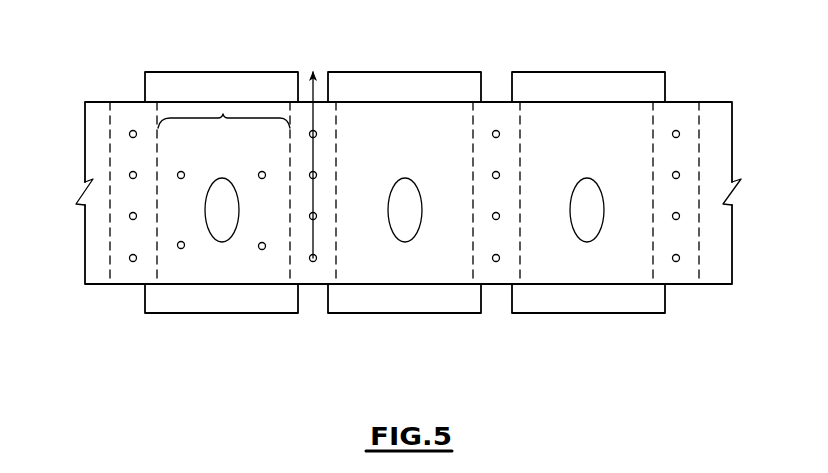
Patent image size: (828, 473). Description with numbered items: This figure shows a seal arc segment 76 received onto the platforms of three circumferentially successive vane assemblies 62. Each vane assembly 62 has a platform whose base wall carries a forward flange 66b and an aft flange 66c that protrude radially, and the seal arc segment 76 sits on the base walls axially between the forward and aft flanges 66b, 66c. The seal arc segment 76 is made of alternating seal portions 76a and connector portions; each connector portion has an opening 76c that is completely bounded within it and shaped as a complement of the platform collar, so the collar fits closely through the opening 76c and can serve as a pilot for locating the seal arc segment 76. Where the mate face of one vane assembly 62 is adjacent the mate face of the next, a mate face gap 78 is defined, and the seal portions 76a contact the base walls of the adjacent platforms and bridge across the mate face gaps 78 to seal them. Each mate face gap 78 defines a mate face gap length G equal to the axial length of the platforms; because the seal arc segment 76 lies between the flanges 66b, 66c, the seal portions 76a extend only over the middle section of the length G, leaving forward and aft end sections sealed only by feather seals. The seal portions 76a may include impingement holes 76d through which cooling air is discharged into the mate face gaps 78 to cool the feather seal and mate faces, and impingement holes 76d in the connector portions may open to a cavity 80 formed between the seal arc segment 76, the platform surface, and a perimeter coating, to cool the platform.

The vane assembly 62 is at (168, 321).
The forward flange 66b is at (228, 295).
The aft flange 66c is at (213, 87).
The seal arc segment 76 is at (96, 100).
The seal portion 76a is at (309, 240).
The opening 76c is at (220, 178).
The impingement hole 76d is at (177, 245).
The mate face gap 78 is at (498, 89).
The cavity 80 is at (222, 118).
The mate face gap length G is at (315, 93).